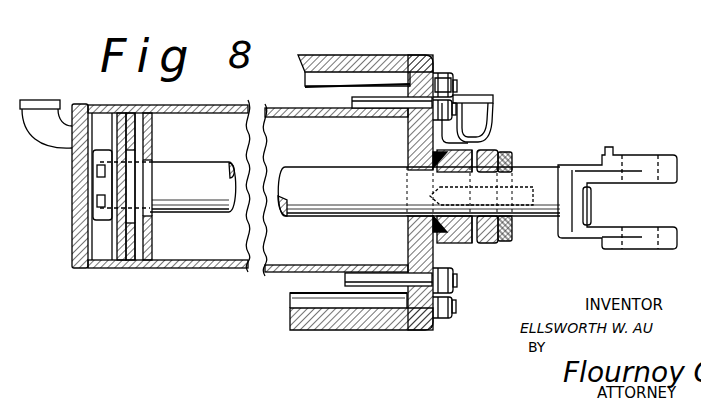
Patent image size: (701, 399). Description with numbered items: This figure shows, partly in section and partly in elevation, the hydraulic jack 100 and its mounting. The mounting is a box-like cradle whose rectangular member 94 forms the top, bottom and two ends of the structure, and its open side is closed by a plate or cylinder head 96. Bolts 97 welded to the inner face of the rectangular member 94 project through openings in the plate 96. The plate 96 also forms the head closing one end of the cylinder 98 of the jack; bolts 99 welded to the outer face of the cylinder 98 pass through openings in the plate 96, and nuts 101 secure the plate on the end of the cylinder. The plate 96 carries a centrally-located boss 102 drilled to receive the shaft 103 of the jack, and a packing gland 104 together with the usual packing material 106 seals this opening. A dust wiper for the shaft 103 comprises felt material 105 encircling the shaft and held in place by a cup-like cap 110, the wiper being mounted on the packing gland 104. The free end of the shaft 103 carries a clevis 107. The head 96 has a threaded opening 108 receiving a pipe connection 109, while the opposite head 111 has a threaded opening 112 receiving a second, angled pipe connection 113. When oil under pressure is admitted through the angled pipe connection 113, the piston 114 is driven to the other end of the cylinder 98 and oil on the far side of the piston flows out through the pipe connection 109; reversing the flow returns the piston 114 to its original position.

The rectangular member 94 is at (352, 62).
The plate or cylinder head 96 is at (433, 250).
The bolt 97 is at (362, 80).
The cylinder 98 is at (232, 268).
The bolt 99 is at (386, 102).
The hydraulic jack 100 is at (240, 324).
The nut 101 is at (445, 73).
The boss 102 is at (482, 114).
The shaft 103 is at (503, 226).
The packing gland 104 is at (482, 150).
The felt material 105 is at (468, 244).
The packing material 106 is at (470, 136).
The clevis 107 is at (645, 154).
The opening 108 is at (470, 90).
The pipe connection 109 is at (487, 100).
The cup-like cap 110 is at (488, 243).
The opposite head 111 is at (93, 205).
The opening 112 is at (72, 166).
The angled pipe connection 113 is at (44, 123).
The piston 114 is at (146, 230).